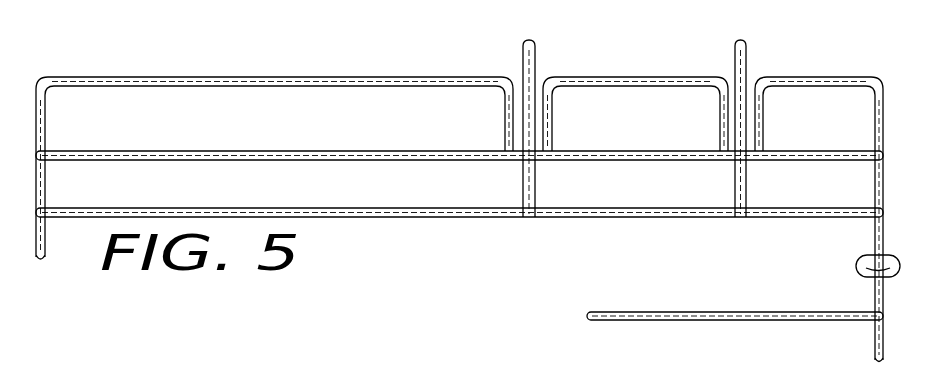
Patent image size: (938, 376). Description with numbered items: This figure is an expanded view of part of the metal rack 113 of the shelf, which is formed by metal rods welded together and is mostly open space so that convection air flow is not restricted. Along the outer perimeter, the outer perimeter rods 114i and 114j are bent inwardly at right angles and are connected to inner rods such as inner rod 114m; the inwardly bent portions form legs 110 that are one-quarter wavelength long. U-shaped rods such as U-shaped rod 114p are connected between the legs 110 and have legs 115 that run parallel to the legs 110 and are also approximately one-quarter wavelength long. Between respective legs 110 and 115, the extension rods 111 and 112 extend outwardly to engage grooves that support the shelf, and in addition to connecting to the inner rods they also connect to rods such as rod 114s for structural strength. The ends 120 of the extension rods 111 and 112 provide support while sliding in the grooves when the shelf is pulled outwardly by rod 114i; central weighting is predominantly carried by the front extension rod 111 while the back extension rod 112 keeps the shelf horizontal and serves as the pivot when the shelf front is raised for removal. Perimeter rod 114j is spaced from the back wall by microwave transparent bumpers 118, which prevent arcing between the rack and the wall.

The metal rack 113 is at (275, 70).
The outer perimeter rod 114i is at (393, 78).
The legs 110 is at (507, 118).
The ends 120 is at (740, 40).
The front extension rod 111 is at (534, 60).
The back extension rod 112 is at (748, 52).
The U-shaped rod 114p is at (690, 80).
The legs 115 is at (552, 122).
The outer perimeter rod 114j is at (870, 80).
The inner rod 114m is at (445, 161).
The rod 114s is at (492, 218).
The microwave transparent bumper 118 is at (855, 263).